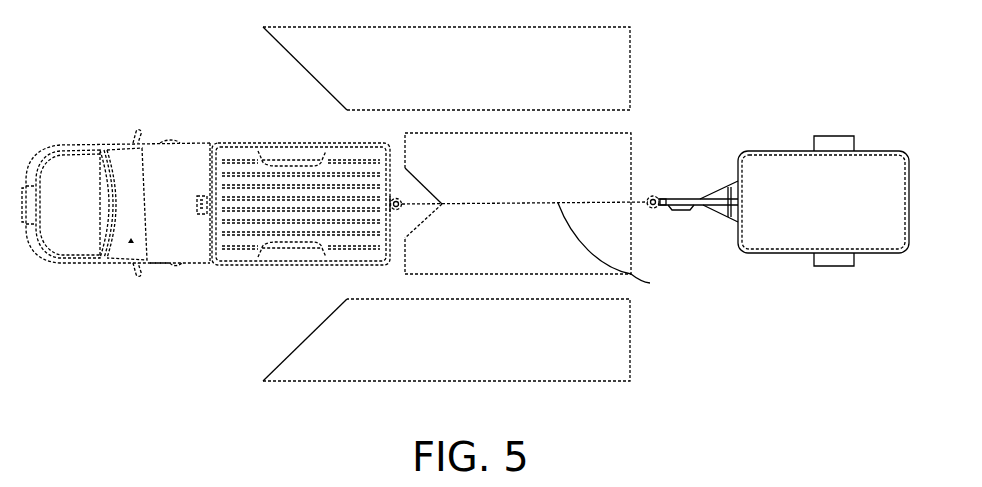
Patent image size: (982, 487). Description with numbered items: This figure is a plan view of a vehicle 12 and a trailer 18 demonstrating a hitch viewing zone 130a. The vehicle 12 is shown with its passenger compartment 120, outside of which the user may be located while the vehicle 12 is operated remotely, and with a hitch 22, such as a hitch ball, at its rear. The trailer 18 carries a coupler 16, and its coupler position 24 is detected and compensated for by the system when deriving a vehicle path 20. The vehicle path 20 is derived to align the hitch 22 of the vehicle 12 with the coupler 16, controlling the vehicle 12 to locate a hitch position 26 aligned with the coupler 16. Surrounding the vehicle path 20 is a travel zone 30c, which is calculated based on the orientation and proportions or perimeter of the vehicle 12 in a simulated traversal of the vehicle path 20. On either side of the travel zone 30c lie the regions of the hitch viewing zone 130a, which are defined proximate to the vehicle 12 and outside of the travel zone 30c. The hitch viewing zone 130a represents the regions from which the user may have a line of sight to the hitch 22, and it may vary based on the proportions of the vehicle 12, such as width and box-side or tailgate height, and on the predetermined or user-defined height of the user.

The vehicle 12 is at (120, 118).
The passenger compartment 120 is at (133, 243).
The hitch 22 is at (397, 195).
The hitch position 26 is at (395, 212).
The travel zone 30c is at (527, 177).
The hitch viewing zone 130a is at (503, 83).
The vehicle path 20 is at (630, 283).
The coupler 16 is at (656, 196).
The coupler position 24 is at (655, 210).
The trailer 18 is at (820, 118).